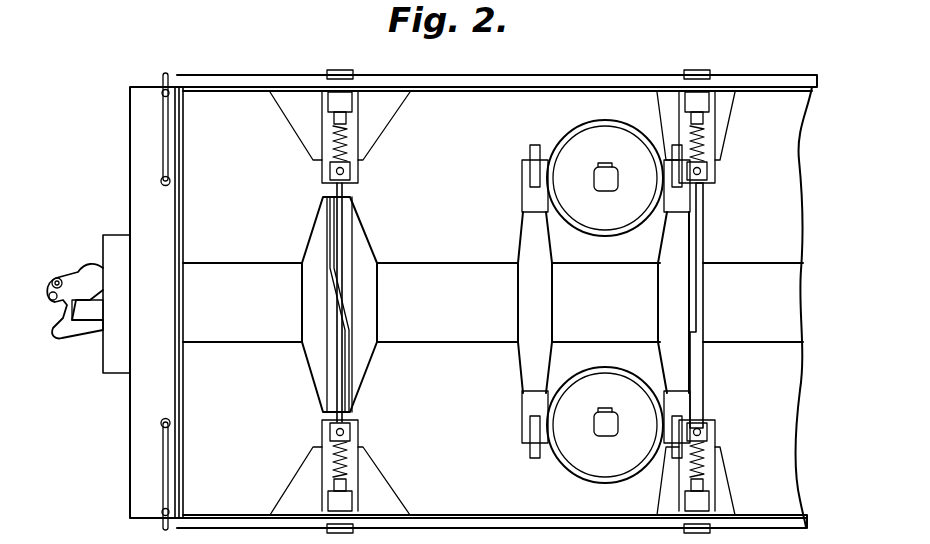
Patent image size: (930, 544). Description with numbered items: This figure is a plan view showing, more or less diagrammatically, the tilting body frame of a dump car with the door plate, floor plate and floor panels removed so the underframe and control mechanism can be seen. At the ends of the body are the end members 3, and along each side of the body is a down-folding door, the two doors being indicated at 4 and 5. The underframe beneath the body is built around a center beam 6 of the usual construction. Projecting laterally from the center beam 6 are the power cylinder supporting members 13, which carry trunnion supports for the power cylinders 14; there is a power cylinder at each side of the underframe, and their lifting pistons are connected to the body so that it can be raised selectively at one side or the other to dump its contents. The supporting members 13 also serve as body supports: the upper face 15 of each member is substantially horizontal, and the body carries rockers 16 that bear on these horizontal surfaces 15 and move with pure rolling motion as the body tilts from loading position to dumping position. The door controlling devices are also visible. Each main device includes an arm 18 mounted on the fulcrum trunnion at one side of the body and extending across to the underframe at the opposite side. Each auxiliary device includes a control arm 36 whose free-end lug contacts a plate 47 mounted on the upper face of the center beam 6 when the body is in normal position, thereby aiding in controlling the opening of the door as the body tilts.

The end member 3 is at (184, 206).
The down-folding door 4 is at (472, 502).
The down-folding door 5 is at (487, 90).
The center beam 6 is at (493, 302).
The power cylinder supporting member 13 is at (527, 240).
The power cylinder 14 is at (605, 301).
The upper face / horizontal supporting surface 15 is at (530, 203).
The rocker 16 is at (530, 152).
The arm 18 is at (340, 221).
The control arm 36 is at (698, 243).
The plate 47 is at (317, 372).